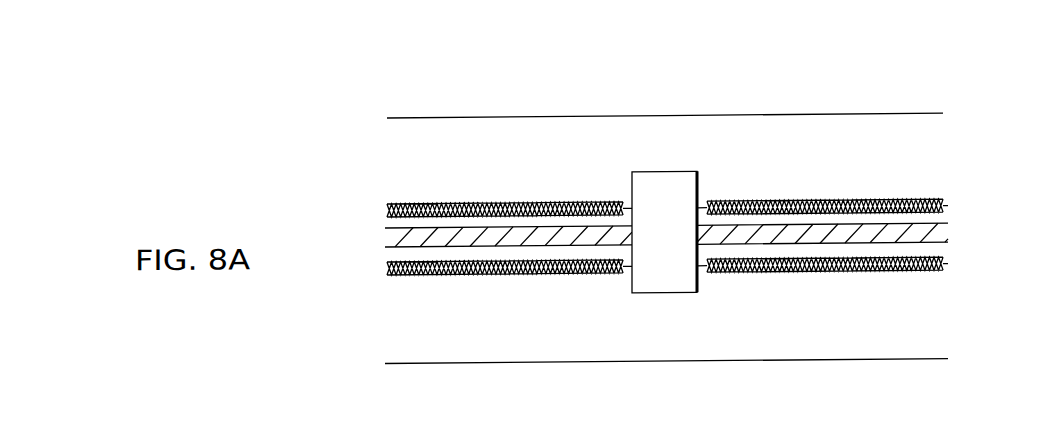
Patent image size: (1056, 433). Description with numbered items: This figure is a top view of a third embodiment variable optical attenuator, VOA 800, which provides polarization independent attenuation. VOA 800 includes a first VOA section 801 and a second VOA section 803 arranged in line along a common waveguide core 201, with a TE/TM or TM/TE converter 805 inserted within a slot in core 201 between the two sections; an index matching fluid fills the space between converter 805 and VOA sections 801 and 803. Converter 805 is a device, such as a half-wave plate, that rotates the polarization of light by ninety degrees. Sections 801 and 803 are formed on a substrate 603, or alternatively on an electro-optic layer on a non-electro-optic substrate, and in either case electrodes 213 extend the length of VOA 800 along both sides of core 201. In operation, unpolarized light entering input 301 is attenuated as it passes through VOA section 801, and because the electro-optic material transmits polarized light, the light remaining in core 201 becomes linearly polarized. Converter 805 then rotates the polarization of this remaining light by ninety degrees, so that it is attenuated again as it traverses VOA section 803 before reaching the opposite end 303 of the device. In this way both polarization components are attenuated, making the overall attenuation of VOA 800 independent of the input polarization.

The VOA 800 is at (660, 157).
The first VOA section 801 is at (571, 104).
The second VOA section 803 is at (826, 110).
The TE/TM or TM/TE converter 805 is at (665, 174).
The electrodes 213 is at (765, 202).
The core 201 is at (433, 243).
The input 301 is at (371, 241).
The output 303 is at (961, 233).
The substrate 603 is at (457, 320).